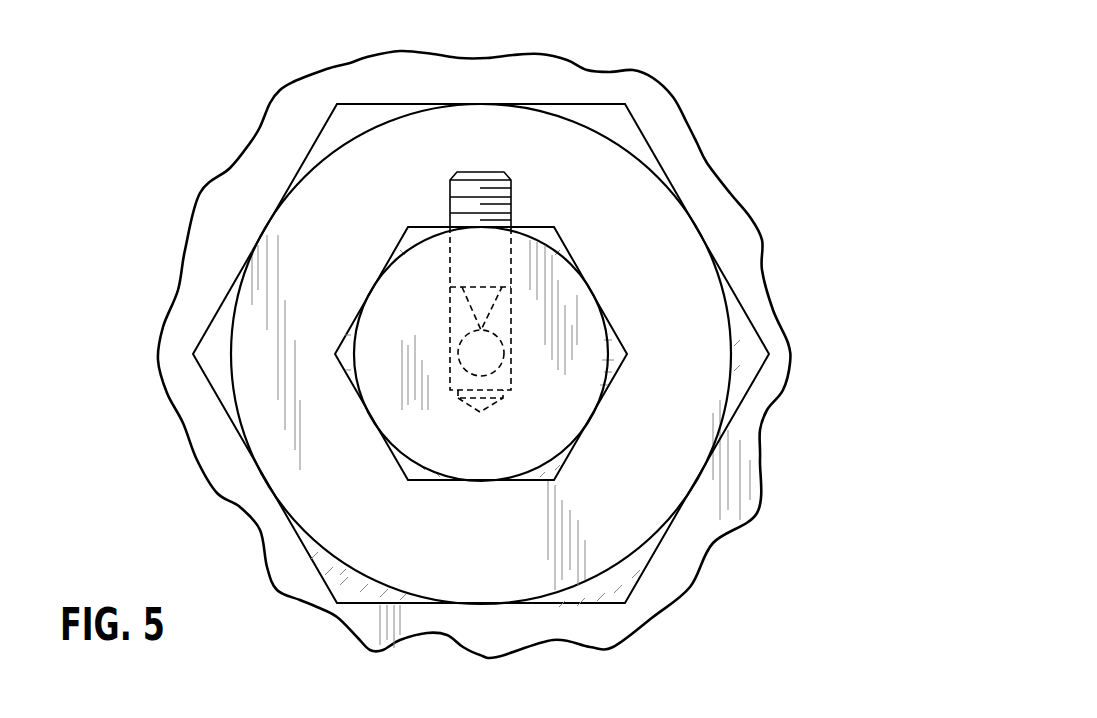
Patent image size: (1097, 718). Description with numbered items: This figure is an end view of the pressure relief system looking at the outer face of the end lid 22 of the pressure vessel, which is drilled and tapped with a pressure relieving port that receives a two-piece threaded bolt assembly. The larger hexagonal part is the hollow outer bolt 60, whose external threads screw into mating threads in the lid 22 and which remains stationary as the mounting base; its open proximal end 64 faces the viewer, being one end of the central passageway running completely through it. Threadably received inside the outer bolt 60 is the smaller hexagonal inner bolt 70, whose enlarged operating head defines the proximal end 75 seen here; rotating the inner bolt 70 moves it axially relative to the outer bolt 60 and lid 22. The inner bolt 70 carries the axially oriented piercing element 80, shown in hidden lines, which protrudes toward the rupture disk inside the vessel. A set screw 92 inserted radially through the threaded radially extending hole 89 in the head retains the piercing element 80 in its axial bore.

The end lid 22 is at (250, 147).
The hollow outer bolt 60 is at (655, 152).
The proximal end 64 is at (655, 207).
The inner bolt 70 is at (615, 330).
The proximal end 75 is at (587, 377).
The piercing element 80 is at (503, 370).
The threaded radially extending hole 89 is at (450, 317).
The set screw 92 is at (450, 200).